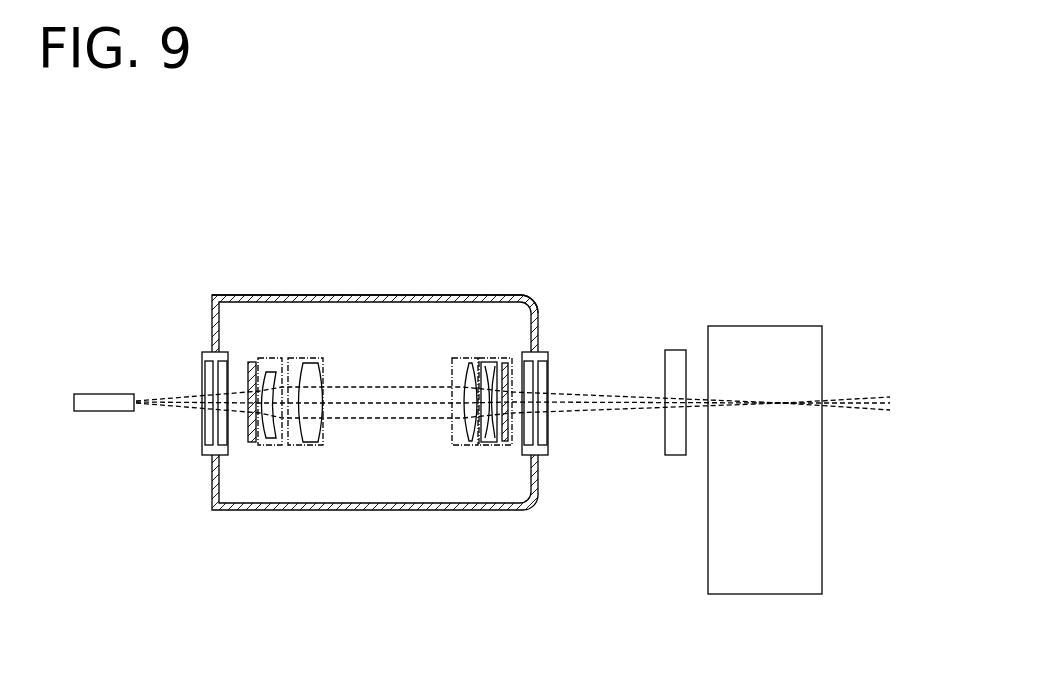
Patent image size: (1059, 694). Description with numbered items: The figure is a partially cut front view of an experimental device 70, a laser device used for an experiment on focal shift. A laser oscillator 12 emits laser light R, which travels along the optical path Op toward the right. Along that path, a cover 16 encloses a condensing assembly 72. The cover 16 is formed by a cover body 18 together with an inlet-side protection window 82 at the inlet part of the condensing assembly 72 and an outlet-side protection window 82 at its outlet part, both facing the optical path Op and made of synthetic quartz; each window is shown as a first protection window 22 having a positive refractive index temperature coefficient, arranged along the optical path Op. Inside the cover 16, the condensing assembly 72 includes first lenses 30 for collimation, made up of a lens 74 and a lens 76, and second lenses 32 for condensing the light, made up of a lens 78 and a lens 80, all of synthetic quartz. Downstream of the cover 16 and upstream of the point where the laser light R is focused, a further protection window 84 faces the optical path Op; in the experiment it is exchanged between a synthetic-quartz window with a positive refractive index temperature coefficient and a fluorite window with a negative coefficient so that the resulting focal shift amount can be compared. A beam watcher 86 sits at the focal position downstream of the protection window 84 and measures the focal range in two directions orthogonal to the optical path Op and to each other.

The laser oscillator 12 is at (107, 394).
The laser light R is at (170, 398).
The cover 16 is at (251, 294).
The cover body 18 is at (308, 297).
The first protection window 22 is at (236, 445).
The first lenses 30 is at (290, 348).
The second lenses 32 is at (487, 348).
The experimental device 70 is at (388, 140).
The condensing assembly 72 is at (378, 338).
The lens 74 is at (268, 447).
The lens 76 is at (307, 447).
The lens 78 is at (470, 447).
The lens 80 is at (503, 447).
The protection window 82 is at (193, 338).
The protection window 84 is at (682, 350).
The beam watcher 86 is at (765, 326).
The optical path Op is at (392, 403).